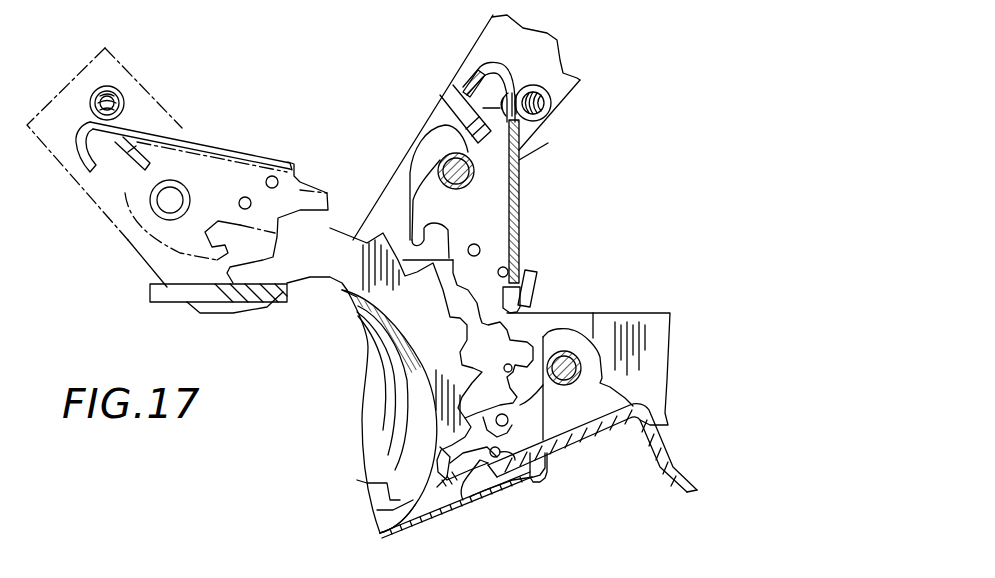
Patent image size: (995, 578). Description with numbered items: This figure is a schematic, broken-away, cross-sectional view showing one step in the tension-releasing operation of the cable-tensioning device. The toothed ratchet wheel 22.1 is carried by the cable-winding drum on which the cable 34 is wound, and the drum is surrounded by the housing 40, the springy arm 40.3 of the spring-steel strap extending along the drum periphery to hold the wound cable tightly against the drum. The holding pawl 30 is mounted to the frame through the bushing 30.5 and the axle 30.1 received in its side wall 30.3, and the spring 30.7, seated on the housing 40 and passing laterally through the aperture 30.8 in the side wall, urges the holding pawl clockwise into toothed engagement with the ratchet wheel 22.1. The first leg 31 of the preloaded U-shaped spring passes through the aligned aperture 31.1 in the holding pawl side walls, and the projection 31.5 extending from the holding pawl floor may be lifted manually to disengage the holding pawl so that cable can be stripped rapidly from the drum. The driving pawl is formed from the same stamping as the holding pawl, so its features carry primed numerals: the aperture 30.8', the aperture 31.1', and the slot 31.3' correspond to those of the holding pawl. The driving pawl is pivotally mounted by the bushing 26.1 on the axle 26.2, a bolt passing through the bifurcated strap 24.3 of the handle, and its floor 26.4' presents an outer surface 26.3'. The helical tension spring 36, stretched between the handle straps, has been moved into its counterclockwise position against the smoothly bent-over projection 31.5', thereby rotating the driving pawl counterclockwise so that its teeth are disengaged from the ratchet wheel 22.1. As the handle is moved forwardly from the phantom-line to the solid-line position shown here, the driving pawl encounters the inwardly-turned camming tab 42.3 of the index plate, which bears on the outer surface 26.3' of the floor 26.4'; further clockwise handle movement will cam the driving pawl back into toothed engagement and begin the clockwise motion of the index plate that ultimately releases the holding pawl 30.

The toothed ratchet wheel 22.1 is at (377, 477).
The strap of the handle 24.3 is at (563, 87).
The bushing 26.1 is at (455, 108).
The axle 26.2 is at (445, 128).
The outer surface of the floor 26.3' is at (516, 168).
The floor of the driving pawl 26.4' is at (558, 216).
The holding pawl 30 is at (530, 467).
The axle 30.1 is at (583, 360).
The side wall 30.3 is at (575, 415).
The bushing 30.5 is at (567, 350).
The spring 30.7 is at (440, 513).
The aperture 30.8 is at (504, 494).
The aperture of the driving pawl 30.8' is at (481, 268).
The first leg of the U-shaped spring 31 is at (508, 420).
The aperture 31.1 is at (508, 443).
The aperture of the driving pawl 31.1' is at (474, 225).
The slot of the driving pawl 31.3' is at (407, 171).
The projection of the holding pawl 31.5 is at (652, 500).
The projection of the driving pawl 31.5' is at (561, 29).
The cable 34 is at (163, 290).
The helical tension spring 36 is at (557, 115).
The housing 40 is at (394, 548).
The arm of the strap 40.3 is at (373, 503).
The inwardly-turned tab 42.3 is at (534, 283).